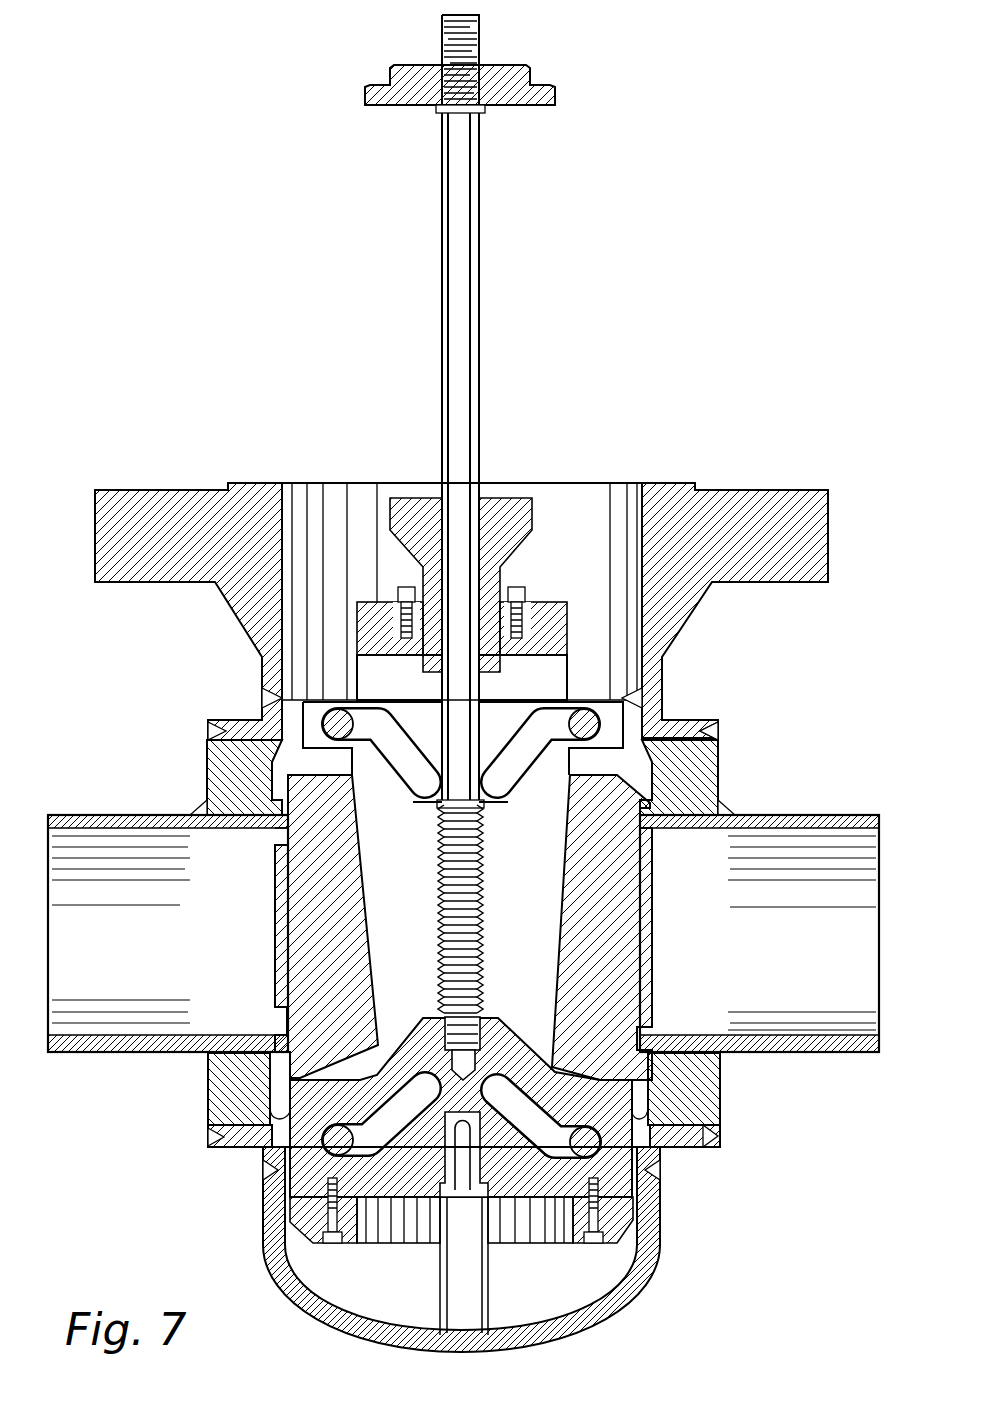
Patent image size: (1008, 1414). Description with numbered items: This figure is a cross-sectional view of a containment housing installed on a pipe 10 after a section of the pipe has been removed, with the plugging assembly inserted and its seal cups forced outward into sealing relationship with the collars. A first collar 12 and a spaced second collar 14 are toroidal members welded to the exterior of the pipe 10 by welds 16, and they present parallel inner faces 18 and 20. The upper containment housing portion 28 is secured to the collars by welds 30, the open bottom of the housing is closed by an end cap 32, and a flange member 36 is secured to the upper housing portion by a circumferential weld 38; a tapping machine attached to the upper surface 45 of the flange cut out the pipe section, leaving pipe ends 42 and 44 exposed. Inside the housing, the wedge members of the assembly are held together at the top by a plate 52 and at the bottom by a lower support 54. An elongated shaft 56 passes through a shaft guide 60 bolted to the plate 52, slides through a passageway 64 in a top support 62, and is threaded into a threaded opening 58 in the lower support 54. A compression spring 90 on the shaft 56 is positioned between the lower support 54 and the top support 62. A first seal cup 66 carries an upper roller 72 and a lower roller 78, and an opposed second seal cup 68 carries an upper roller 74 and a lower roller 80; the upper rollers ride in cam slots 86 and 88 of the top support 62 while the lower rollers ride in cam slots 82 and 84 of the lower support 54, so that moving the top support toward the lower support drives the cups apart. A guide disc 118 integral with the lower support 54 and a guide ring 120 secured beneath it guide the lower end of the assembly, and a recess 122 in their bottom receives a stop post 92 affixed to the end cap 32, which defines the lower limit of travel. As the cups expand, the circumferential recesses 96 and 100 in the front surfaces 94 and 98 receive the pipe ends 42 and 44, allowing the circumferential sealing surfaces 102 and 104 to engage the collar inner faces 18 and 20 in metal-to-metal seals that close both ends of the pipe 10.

The pipe 10 is at (97, 815).
The first collar 12 is at (218, 1077).
The second collar 14 is at (722, 1090).
The welds 16 is at (200, 808).
The inner face 18 is at (265, 1152).
The inner face 20 is at (648, 1133).
The upper containment housing portion 28 is at (235, 718).
The welds 30 is at (210, 737).
The end cap 32 is at (612, 1310).
The flange member 36 is at (793, 541).
The circumferential weld 38 is at (262, 698).
The pipe end 42 is at (278, 1020).
The pipe end 44 is at (652, 840).
The upper surface 45 is at (742, 483).
The plate 52 is at (550, 608).
The lower support 54 is at (635, 1175).
The shaft 56 is at (470, 318).
The threaded opening 58 is at (441, 1010).
The shaft guide 60 is at (505, 496).
The top support 62 is at (507, 708).
The passageway 64 is at (455, 735).
The first seal cup 66 is at (296, 950).
The second seal cup 68 is at (612, 930).
The first roller 72 is at (340, 710).
The second roller 74 is at (582, 710).
The lower roller 78 is at (340, 1125).
The lower roller 80 is at (582, 1127).
The cam slot 82 is at (385, 1150).
The cam slot 84 is at (527, 1150).
The cam slot 86 is at (402, 770).
The cam slot 88 is at (520, 770).
The compression spring 90 is at (437, 915).
The stop post 92 is at (445, 1270).
The front surface 94 is at (275, 917).
The circumferential recess 96 is at (278, 842).
The front surface 98 is at (654, 912).
The circumferential recess 100 is at (655, 1015).
The circumferential sealing surface 102 is at (233, 828).
The circumferential sealing surface 104 is at (690, 770).
The guide disc 118 is at (648, 1190).
The guide ring 120 is at (640, 1222).
The recess 122 is at (468, 1130).